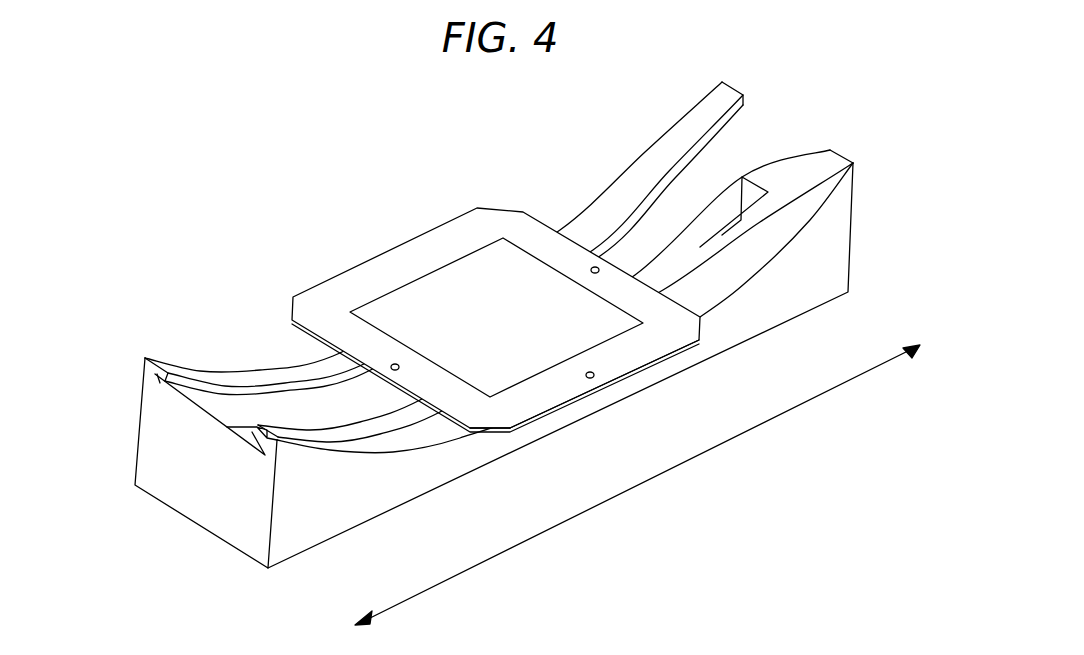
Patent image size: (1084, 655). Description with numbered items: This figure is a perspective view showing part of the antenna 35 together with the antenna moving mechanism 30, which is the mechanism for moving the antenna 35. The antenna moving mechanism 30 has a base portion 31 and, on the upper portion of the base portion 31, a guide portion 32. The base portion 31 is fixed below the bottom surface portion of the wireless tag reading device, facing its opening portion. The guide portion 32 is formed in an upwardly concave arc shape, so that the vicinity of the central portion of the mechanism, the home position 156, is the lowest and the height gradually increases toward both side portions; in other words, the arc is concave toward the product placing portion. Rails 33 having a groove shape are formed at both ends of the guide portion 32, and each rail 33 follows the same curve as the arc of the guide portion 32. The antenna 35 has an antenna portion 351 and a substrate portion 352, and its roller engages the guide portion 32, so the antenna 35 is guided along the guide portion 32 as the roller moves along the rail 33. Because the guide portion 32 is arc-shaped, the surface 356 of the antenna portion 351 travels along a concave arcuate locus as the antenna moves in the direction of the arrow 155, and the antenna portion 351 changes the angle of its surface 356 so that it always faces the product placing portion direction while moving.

The antenna moving mechanism 30 is at (380, 170).
The base portion 31 is at (377, 505).
The guide portion 32 is at (650, 235).
The rails 33 is at (240, 440).
The antenna 35 is at (628, 350).
The antenna portion 351 is at (485, 272).
The substrate portion 352 is at (532, 400).
The surface of the antenna portion 356 is at (437, 313).
The arrow 155 is at (651, 482).
The home position 156 is at (595, 405).